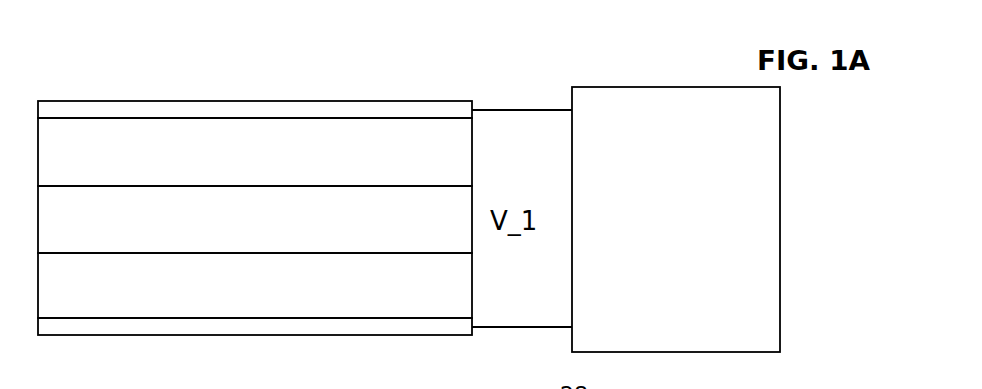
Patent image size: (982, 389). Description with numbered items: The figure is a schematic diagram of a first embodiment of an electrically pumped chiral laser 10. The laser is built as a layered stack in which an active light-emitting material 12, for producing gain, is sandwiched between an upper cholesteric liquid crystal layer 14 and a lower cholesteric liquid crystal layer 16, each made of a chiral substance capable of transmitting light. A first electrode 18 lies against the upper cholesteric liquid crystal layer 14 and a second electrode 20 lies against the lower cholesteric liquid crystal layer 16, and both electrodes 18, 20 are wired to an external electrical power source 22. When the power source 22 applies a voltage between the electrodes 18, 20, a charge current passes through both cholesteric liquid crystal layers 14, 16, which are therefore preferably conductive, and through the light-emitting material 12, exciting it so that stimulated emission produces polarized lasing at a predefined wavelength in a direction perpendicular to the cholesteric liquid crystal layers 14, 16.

The chiral laser 10 is at (520, 87).
The light-emitting material 12 is at (165, 218).
The upper cholesteric liquid crystal layer 14 is at (472, 152).
The lower cholesteric liquid crystal layer 16 is at (472, 287).
The first electrode 18 is at (256, 101).
The second electrode 20 is at (255, 335).
The power source 22 is at (780, 287).